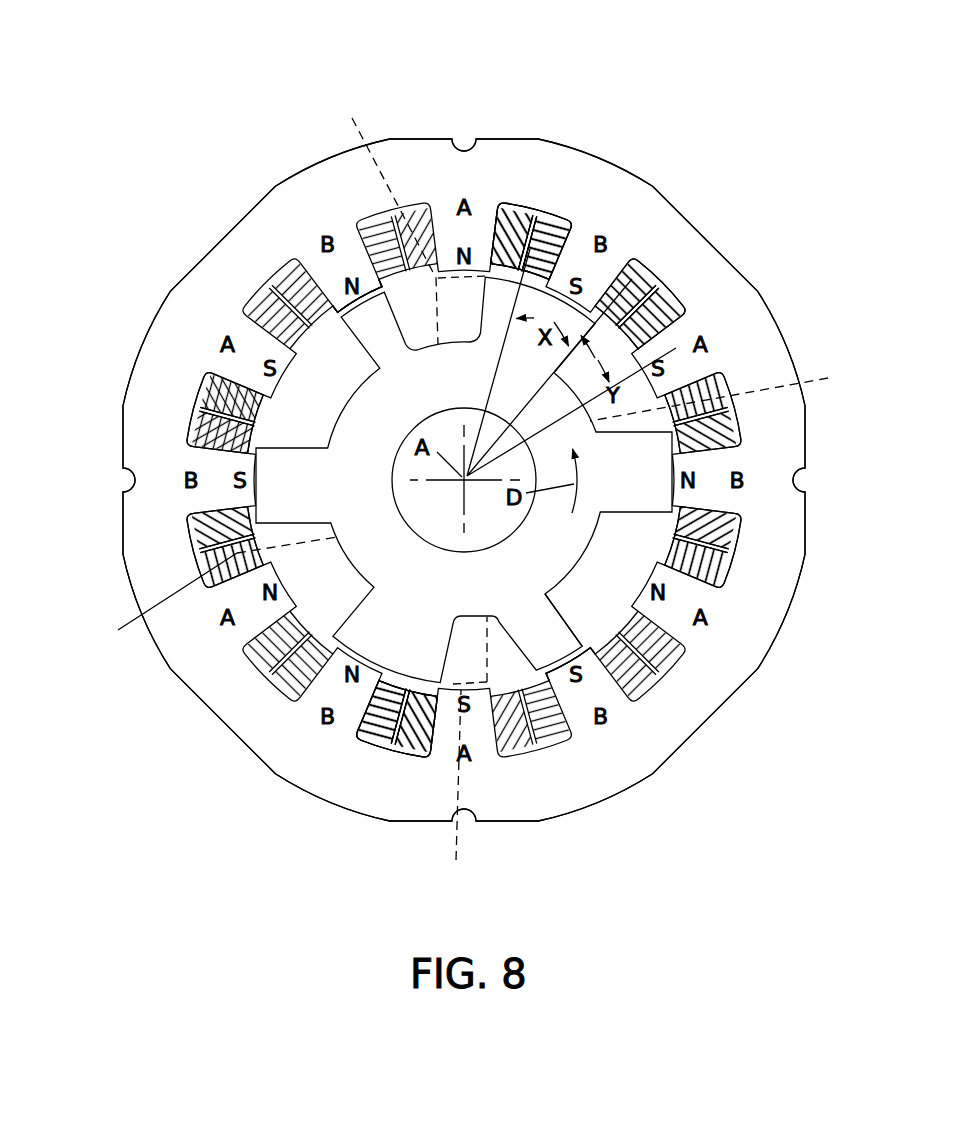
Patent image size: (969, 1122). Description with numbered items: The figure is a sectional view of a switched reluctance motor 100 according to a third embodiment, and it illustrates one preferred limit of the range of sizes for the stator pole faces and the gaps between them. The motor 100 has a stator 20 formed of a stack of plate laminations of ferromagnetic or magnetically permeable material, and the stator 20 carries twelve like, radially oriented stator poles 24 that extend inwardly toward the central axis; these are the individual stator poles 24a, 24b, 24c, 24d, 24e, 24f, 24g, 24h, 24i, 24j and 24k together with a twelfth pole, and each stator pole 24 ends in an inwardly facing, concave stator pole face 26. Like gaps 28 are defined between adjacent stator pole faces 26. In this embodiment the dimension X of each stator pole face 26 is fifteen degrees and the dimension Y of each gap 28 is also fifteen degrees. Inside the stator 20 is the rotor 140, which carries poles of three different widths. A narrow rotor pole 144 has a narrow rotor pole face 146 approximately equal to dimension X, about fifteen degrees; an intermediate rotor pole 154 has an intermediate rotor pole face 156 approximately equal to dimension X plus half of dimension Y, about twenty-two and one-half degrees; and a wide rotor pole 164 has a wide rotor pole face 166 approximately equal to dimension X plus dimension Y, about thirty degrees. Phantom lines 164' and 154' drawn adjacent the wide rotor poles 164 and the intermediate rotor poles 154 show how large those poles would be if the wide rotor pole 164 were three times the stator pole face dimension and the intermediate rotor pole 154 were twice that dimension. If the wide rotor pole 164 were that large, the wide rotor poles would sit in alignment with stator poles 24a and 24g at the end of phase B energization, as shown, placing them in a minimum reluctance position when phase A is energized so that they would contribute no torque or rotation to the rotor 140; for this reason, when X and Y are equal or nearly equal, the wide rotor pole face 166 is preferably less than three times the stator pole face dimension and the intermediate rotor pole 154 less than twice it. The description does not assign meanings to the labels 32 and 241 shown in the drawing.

The motor 100 is at (763, 86).
The stator 20 is at (613, 160).
The stator pole 24 is at (446, 222).
The stator pole 24a is at (478, 212).
The stator pole 24b is at (600, 270).
The stator pole 24c is at (640, 348).
The stator pole 24d is at (717, 487).
The stator pole 24e is at (688, 602).
The stator pole 24f is at (602, 693).
The stator pole 24g is at (482, 720).
The stator pole 24h is at (333, 688).
The stator pole 24i is at (253, 602).
The stator pole 24j is at (218, 487).
The stator pole 24k is at (232, 360).
The stator pole face 26 is at (676, 472).
The gap 28 is at (677, 340).
The permanent magnets 32 is at (497, 222).
The rotor 140 is at (574, 568).
The narrow rotor pole 144 is at (333, 310).
The narrow rotor pole face 146 is at (374, 308).
The intermediate rotor pole 154 is at (465, 480).
The intermediate rotor pole face 156 is at (720, 507).
The phantom line 154' is at (473, 500).
The wide rotor pole 164 is at (466, 472).
The wide rotor pole face 166 is at (513, 257).
The phantom line 164' is at (404, 487).
The pole body 241 is at (325, 263).